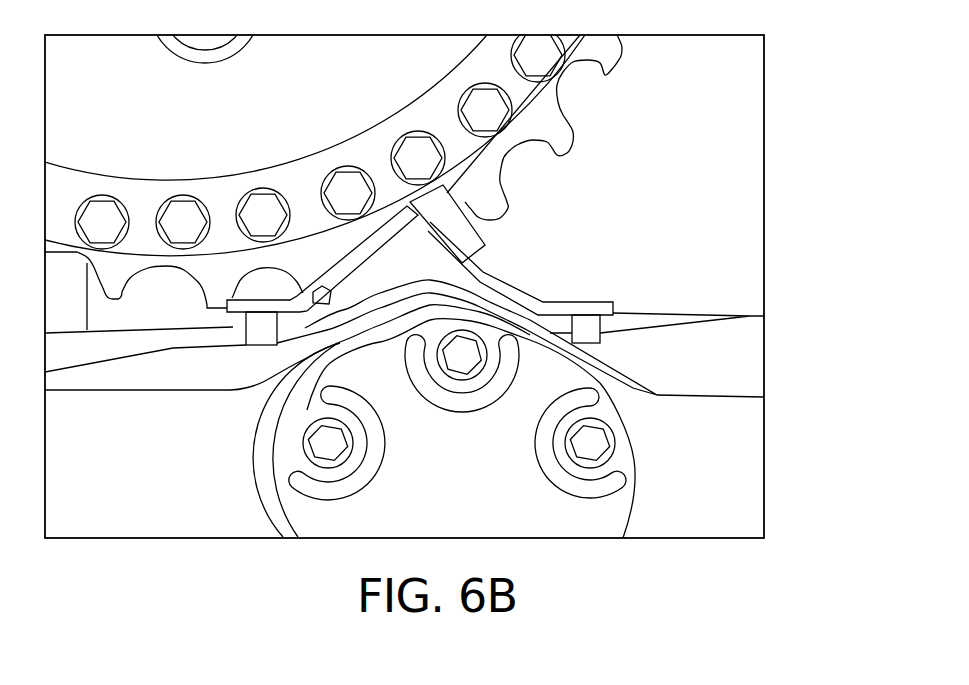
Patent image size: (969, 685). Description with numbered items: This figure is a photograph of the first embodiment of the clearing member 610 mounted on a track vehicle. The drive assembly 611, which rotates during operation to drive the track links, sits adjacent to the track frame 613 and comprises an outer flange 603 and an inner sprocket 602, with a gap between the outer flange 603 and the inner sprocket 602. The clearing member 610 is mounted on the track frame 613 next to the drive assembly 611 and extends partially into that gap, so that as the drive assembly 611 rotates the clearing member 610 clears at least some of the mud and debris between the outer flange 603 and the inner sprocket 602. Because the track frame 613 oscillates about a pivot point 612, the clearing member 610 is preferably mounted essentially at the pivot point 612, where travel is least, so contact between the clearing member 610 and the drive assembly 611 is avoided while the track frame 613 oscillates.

The drive assembly 611 is at (523, 87).
The outer flange 603 is at (510, 123).
The inner sprocket 602 is at (488, 190).
The clearing member 610 is at (490, 273).
The pivot point 612 is at (570, 402).
The track frame 613 is at (735, 477).